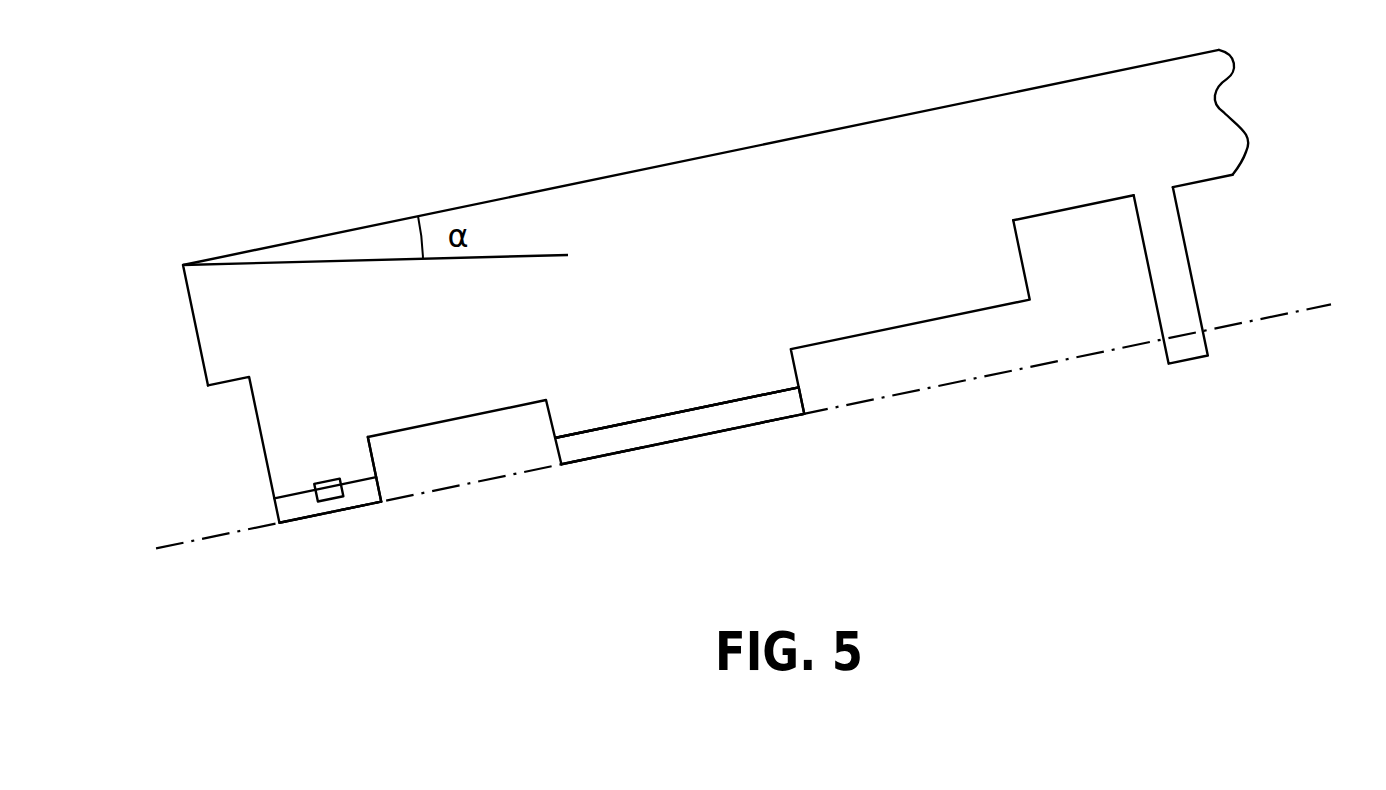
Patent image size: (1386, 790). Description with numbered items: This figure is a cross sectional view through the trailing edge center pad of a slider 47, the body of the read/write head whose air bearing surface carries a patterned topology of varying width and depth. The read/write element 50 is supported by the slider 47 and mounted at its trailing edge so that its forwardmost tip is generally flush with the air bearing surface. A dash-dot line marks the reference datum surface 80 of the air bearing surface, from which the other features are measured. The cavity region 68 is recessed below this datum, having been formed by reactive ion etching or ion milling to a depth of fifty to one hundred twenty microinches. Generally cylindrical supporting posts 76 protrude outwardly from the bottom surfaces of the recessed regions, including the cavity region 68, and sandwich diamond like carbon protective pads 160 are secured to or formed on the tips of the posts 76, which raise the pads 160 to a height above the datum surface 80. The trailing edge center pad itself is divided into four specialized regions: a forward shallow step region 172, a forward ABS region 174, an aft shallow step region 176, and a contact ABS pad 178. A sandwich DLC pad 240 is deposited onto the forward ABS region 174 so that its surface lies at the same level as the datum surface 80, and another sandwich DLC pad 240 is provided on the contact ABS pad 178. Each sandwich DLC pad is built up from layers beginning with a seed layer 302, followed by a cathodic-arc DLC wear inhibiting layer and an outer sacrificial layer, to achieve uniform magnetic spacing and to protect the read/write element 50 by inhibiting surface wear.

The slider 47 is at (863, 157).
The read/write element 50 is at (323, 482).
The cavity region 68 is at (1055, 210).
The supporting posts 76 is at (1173, 253).
The datum surface 80 is at (768, 417).
The sandwich DLC protective pads 160 is at (1175, 350).
The forward shallow step region 172 is at (908, 322).
The forward ABS region 174 is at (612, 413).
The aft shallow step region 176 is at (452, 418).
The contact ABS pad 178 is at (303, 470).
The sandwich DLC pad 240 is at (348, 503).
The seed layer 302 is at (658, 413).